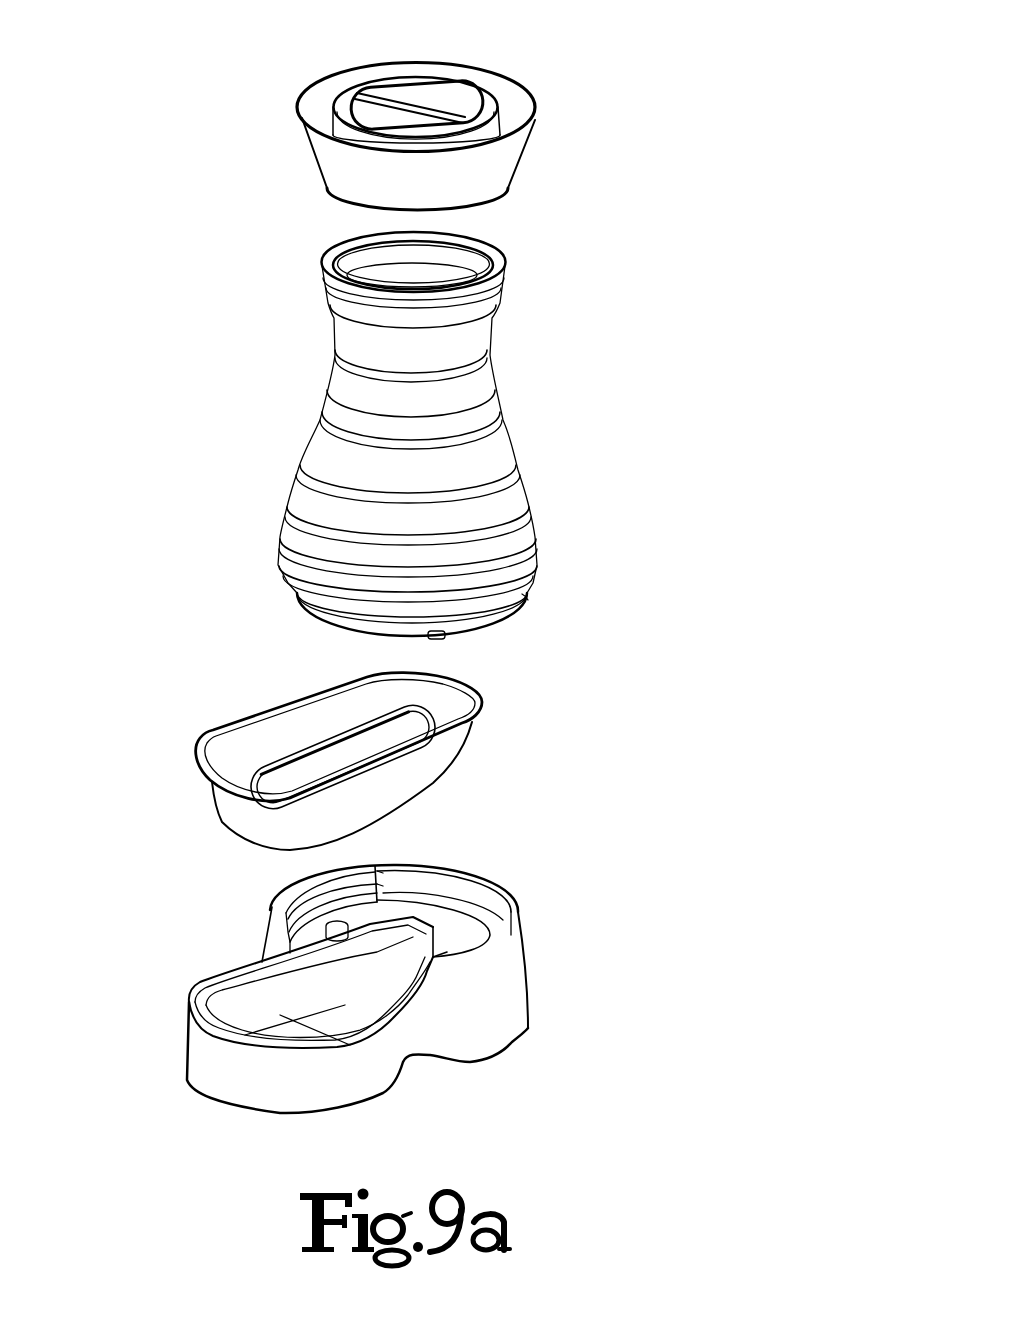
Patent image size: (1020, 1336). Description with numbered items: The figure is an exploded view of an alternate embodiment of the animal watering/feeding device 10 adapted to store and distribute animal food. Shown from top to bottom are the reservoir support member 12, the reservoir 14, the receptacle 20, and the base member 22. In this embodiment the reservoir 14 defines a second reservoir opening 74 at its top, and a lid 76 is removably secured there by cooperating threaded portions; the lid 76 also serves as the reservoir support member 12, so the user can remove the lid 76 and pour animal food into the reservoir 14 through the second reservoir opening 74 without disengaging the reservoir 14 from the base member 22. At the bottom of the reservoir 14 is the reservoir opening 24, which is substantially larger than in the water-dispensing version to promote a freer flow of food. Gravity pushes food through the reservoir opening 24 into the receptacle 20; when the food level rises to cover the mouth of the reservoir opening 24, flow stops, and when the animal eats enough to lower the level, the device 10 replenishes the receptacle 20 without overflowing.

The animal watering/feeding device 10 is at (212, 284).
The reservoir support member 12 is at (455, 66).
The lid 76 is at (417, 104).
The reservoir 14 is at (489, 330).
The second reservoir opening 74 is at (413, 278).
The reservoir opening 24 is at (342, 632).
The receptacle 20 is at (476, 692).
The base member 22 is at (464, 880).